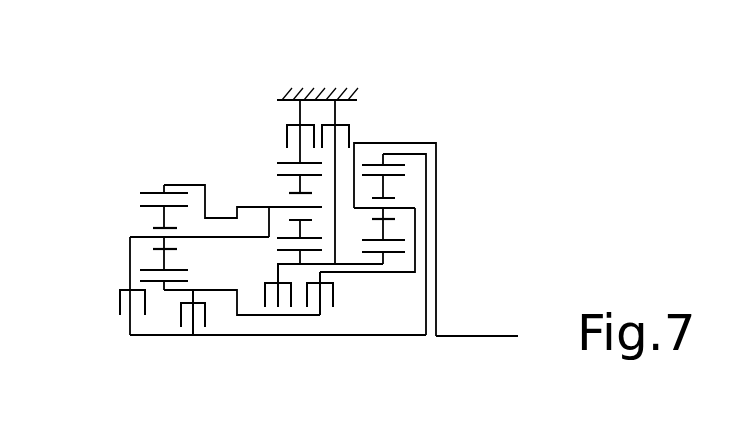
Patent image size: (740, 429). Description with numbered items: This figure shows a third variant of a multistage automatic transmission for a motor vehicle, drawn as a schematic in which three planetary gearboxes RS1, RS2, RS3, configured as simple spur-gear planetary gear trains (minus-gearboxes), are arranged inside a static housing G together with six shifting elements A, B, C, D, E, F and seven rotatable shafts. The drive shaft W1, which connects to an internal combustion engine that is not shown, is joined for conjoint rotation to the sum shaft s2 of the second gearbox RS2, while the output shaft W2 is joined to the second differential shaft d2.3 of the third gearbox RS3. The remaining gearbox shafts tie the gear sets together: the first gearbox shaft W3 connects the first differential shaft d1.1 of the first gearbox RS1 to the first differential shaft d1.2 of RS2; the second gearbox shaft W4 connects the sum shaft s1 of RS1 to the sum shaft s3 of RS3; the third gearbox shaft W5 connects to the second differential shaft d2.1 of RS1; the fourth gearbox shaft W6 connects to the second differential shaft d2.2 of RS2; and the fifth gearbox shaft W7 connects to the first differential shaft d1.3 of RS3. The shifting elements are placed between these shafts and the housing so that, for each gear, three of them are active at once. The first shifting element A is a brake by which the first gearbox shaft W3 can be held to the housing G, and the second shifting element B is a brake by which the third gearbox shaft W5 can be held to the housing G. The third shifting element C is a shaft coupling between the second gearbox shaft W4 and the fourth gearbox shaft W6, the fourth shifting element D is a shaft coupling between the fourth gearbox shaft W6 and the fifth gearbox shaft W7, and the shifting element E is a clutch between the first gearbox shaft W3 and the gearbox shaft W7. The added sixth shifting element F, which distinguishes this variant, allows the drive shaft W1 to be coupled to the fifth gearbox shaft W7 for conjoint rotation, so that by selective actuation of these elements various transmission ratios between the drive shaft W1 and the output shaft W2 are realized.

The housing G is at (340, 93).
The second shifting element B is at (296, 125).
The first shifting element A is at (350, 128).
The third shifting element C is at (120, 302).
The fourth shifting element D is at (181, 308).
The shifting element E is at (265, 289).
The sixth shifting element F is at (333, 295).
The drive shaft W1 is at (468, 336).
The output shaft W2 is at (185, 185).
The first gearbox shaft W3 is at (347, 265).
The second gearbox shaft W4 is at (205, 238).
The third gearbox shaft W5 is at (301, 138).
The fourth gearbox shaft W6 is at (306, 336).
The fifth gearbox shaft W7 is at (237, 302).
The first 3-shaft gearbox RS1 is at (289, 185).
The second 3-shaft gearbox RS2 is at (400, 190).
The third 3-shaft gearbox RS3 is at (145, 220).
The sum shaft of the first 3-shaft gearbox s1 is at (285, 206).
The sum shaft of the second 3-shaft gearbox s2 is at (388, 208).
The sum shaft of the third 3-shaft gearbox s3 is at (152, 238).
The first differential shaft of the first 3-shaft gearbox d1.1 is at (300, 252).
The first differential shaft of the second 3-shaft gearbox d1.2 is at (386, 254).
The first differential shaft of the third 3-shaft gearbox d1.3 is at (165, 283).
The second differential shaft of the first 3-shaft gearbox d2.1 is at (297, 161).
The second differential shaft of the second 3-shaft gearbox d2.2 is at (384, 165).
The second differential shaft of the third 3-shaft gearbox d2.3 is at (163, 193).